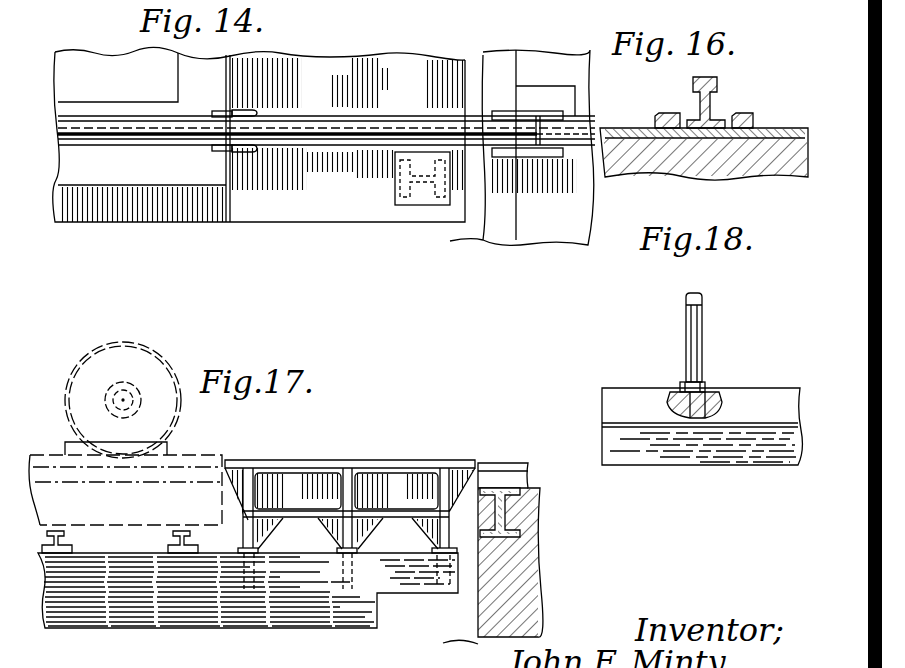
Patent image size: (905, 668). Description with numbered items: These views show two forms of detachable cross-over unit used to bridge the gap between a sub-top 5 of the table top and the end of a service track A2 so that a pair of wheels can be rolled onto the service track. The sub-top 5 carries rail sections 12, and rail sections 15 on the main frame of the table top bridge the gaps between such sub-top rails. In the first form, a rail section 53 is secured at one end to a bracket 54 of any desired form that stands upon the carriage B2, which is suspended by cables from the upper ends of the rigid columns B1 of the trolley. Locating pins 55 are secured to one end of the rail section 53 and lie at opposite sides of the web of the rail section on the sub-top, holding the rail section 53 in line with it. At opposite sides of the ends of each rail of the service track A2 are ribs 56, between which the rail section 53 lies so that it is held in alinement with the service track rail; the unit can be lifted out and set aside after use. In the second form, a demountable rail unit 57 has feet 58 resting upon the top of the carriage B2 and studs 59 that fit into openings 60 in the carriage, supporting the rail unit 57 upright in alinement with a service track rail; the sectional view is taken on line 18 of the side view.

In FIG. 14, the sub-top 5 is at (78, 153).
In FIG. 17, the sub-top 5 is at (72, 447).
In FIG. 14, the rail sections 12 is at (100, 127).
In FIG. 14, the rail sections 15 is at (218, 50).
In FIG. 17, the section line 18— 18 is at (475, 635).
In FIG. 14, the rail section 53 is at (376, 128).
In FIG. 16, the rail section 53 is at (716, 82).
In FIG. 14, the bracket 54 is at (250, 110).
In FIG. 14, the locating pins 55 is at (226, 113).
In FIG. 14, the ribs 56 is at (506, 112).
In FIG. 16, the ribs 56 is at (667, 113).
In FIG. 18, the demountable rail unit 57 is at (687, 312).
In FIG. 17, the demountable rail unit 57 is at (388, 462).
In FIG. 18, the feet 58 is at (700, 380).
In FIG. 17, the feet 58 is at (330, 546).
In FIG. 18, the studs 59 is at (715, 392).
In FIG. 17, the studs 59 is at (241, 564).
In FIG. 18, the openings 60 is at (705, 410).
In FIG. 17, the openings 60 is at (255, 578).
In FIG. 14, the service track A2 is at (578, 130).
In FIG. 16, the service track A2 is at (660, 52).
In FIG. 17, the service track A2 is at (506, 447).
In FIG. 14, the carriage B2 is at (350, 214).
In FIG. 18, the carriage B2 is at (630, 397).
In FIG. 17, the carriage B2 is at (190, 612).
In FIG. 14, the columns B1 is at (483, 244).